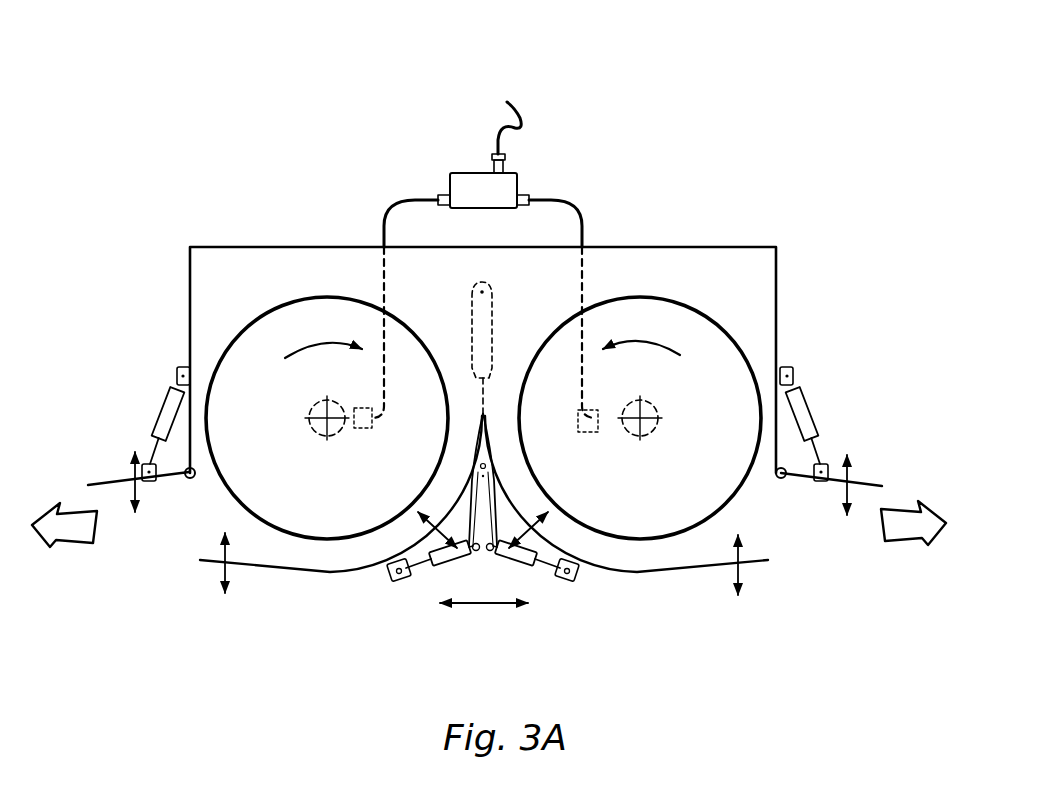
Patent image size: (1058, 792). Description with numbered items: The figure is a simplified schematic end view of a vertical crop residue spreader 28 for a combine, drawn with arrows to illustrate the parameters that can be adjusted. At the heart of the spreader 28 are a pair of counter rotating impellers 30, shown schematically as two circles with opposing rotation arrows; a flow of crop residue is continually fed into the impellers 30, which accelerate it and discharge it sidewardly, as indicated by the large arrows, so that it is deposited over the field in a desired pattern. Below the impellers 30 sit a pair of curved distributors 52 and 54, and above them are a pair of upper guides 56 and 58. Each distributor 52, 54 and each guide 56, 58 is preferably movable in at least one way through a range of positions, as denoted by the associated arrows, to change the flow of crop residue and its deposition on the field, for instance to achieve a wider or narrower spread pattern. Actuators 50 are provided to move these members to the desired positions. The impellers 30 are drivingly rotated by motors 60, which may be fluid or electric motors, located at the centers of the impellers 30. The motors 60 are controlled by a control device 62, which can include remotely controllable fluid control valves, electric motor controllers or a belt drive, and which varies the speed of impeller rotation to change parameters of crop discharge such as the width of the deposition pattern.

The spreader 28 is at (712, 118).
The counter rotating impellers 30 is at (295, 296).
The actuators 50 is at (494, 319).
The curved distributor 52 is at (202, 562).
The curved distributor 54 is at (766, 562).
The upper guide 56 is at (100, 483).
The upper guide 58 is at (867, 487).
The motors 60 is at (340, 437).
The control device 62 is at (467, 173).